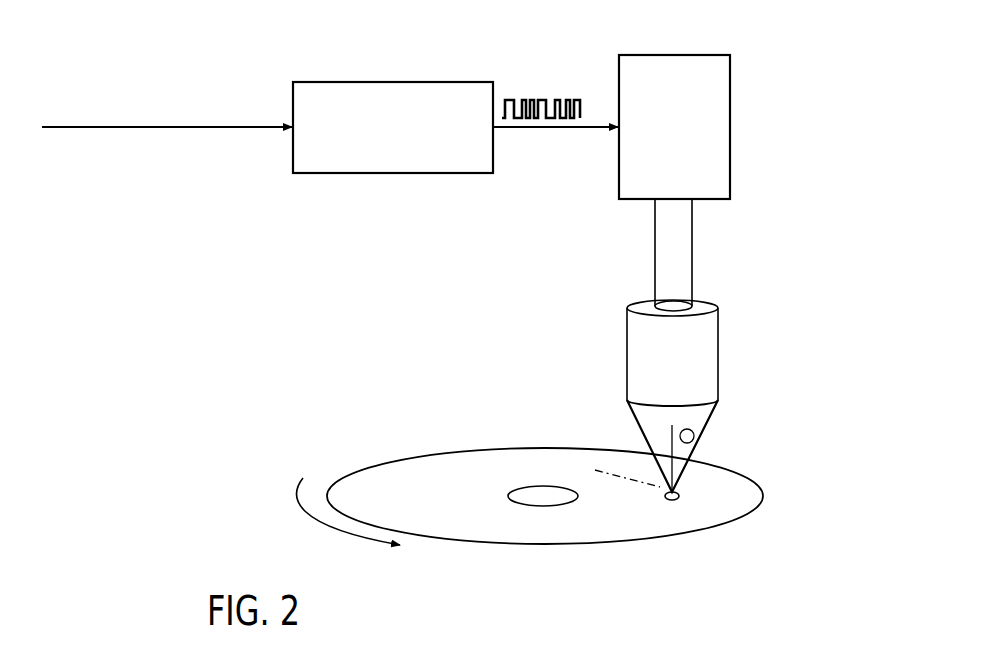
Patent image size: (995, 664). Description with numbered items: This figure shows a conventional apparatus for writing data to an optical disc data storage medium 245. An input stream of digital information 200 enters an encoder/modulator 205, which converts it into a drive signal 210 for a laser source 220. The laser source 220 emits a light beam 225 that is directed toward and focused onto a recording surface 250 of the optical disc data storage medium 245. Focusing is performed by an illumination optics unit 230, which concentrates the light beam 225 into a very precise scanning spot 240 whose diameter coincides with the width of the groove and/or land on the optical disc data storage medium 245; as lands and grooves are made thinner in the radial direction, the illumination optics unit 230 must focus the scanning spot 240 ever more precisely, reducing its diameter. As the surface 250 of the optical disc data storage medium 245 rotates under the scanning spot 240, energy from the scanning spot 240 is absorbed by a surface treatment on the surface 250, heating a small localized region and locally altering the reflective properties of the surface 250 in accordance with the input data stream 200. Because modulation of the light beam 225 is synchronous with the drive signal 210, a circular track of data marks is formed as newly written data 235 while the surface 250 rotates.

The input data stream 200 is at (161, 68).
The encoder/modulator 205 is at (325, 82).
The drive signal 210 is at (553, 67).
The laser source 220 is at (730, 88).
The light beam 225 is at (692, 250).
The illumination optics unit 230 is at (718, 326).
The newly written data 235 is at (622, 470).
The scanning spot 240 is at (680, 500).
The optical disc data storage medium 245 is at (615, 545).
The recording surface 250 is at (373, 473).